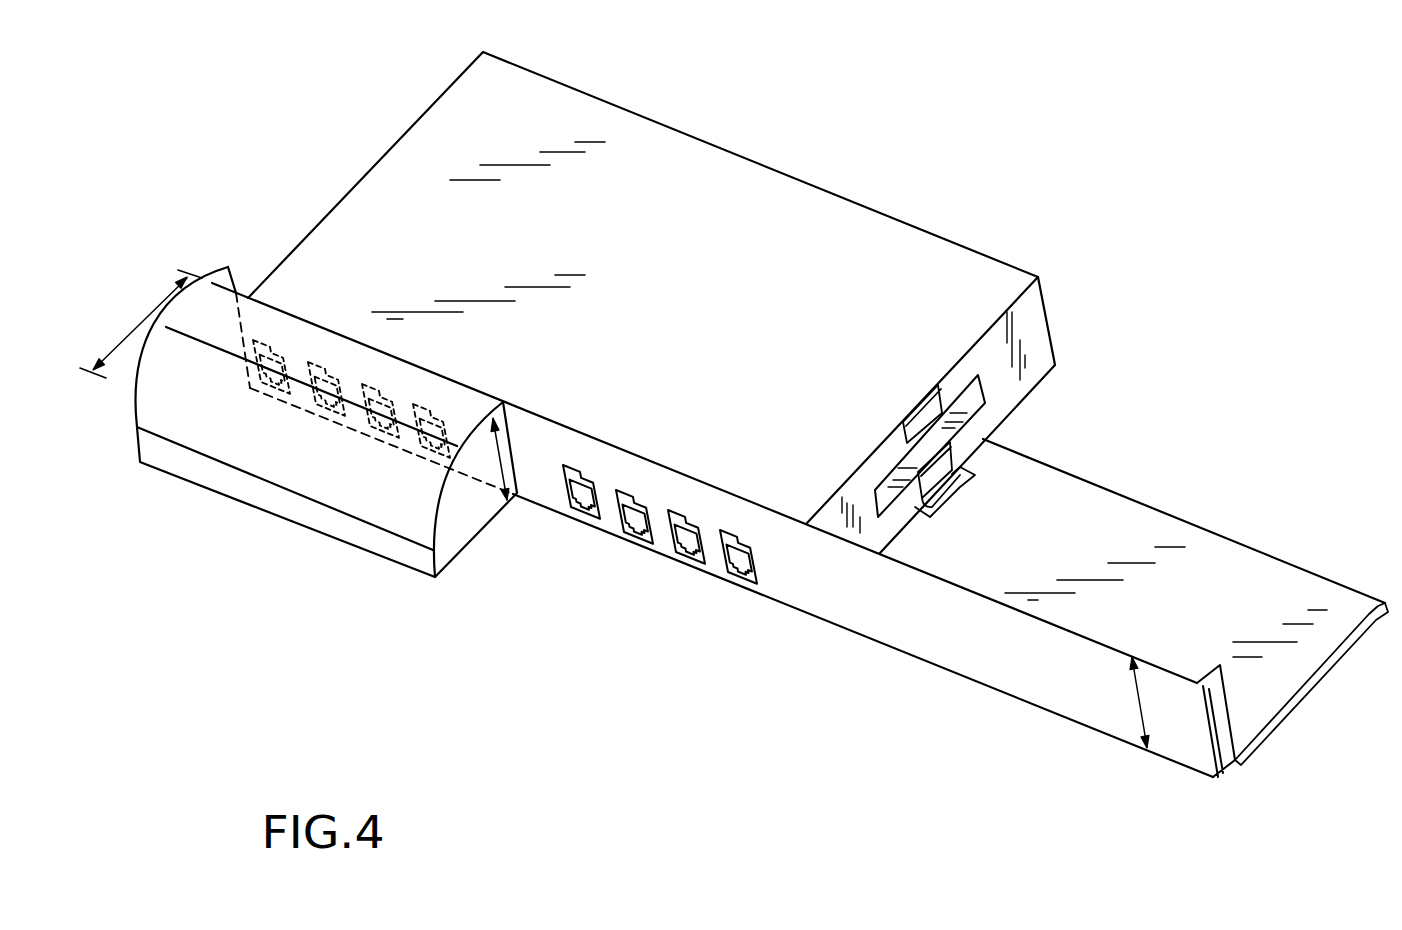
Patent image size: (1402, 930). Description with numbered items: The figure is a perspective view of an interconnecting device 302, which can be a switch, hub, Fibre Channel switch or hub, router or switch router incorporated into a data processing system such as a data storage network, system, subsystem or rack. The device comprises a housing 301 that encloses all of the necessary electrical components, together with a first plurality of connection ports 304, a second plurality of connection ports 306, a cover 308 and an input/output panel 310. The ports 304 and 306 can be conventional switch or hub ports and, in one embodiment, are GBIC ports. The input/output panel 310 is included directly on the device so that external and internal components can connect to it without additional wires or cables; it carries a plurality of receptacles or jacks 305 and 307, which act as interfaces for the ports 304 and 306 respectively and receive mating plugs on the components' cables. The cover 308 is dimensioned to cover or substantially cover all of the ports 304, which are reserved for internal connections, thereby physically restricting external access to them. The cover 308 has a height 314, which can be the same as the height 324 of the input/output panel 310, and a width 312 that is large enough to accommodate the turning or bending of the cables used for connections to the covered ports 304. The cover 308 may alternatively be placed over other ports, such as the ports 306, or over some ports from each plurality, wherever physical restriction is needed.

The housing 301 is at (765, 351).
The interconnecting device 302 is at (948, 125).
The first plurality of connection ports 304 is at (455, 470).
The jacks 305 is at (290, 367).
The second plurality of connection ports 306 is at (757, 602).
The jacks 307 is at (593, 500).
The cover 308 is at (403, 517).
The input/output panel 310 is at (970, 652).
The width 312 is at (138, 328).
The height 314 is at (498, 475).
The height 324 is at (1145, 708).